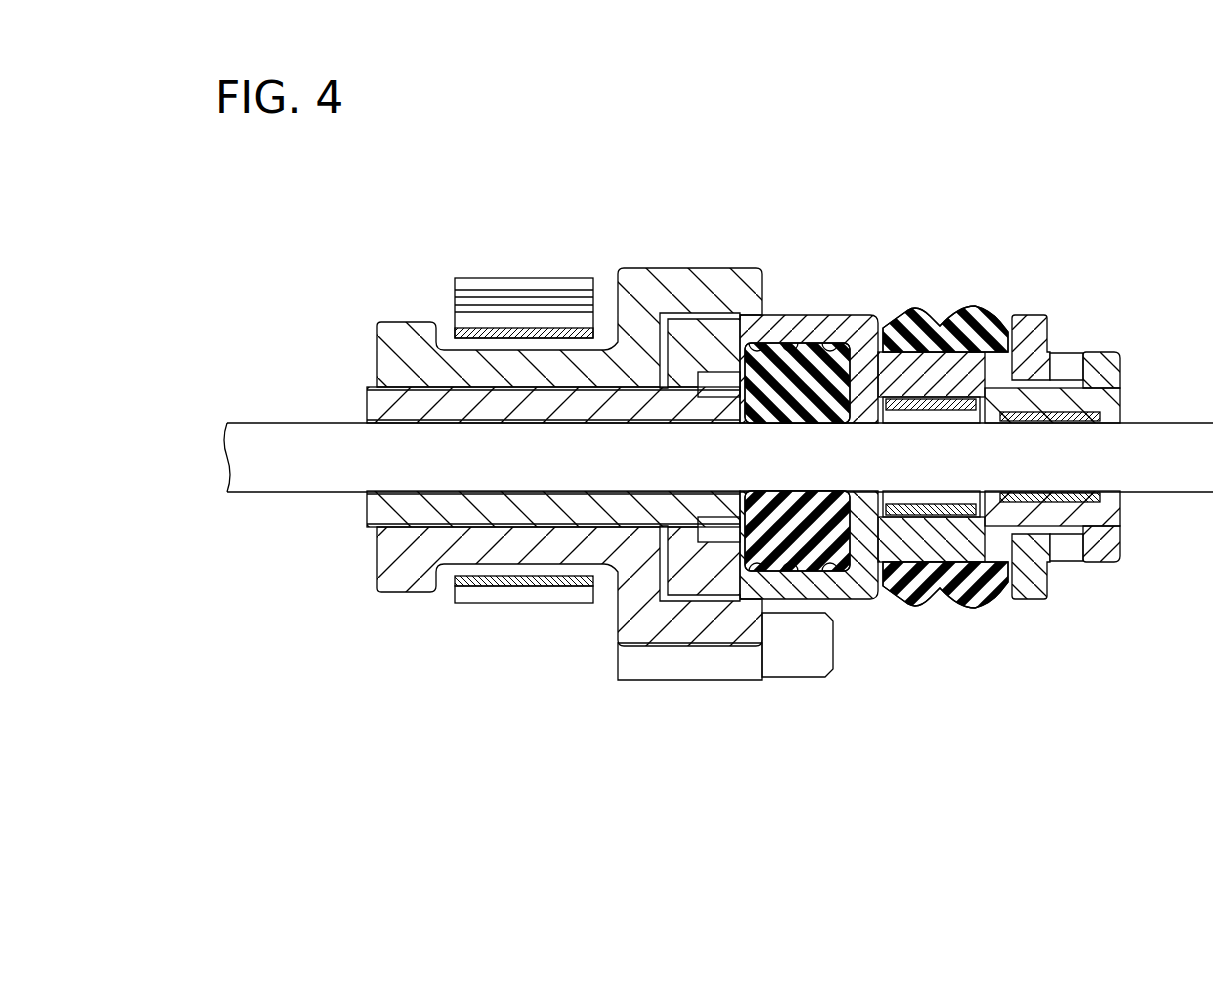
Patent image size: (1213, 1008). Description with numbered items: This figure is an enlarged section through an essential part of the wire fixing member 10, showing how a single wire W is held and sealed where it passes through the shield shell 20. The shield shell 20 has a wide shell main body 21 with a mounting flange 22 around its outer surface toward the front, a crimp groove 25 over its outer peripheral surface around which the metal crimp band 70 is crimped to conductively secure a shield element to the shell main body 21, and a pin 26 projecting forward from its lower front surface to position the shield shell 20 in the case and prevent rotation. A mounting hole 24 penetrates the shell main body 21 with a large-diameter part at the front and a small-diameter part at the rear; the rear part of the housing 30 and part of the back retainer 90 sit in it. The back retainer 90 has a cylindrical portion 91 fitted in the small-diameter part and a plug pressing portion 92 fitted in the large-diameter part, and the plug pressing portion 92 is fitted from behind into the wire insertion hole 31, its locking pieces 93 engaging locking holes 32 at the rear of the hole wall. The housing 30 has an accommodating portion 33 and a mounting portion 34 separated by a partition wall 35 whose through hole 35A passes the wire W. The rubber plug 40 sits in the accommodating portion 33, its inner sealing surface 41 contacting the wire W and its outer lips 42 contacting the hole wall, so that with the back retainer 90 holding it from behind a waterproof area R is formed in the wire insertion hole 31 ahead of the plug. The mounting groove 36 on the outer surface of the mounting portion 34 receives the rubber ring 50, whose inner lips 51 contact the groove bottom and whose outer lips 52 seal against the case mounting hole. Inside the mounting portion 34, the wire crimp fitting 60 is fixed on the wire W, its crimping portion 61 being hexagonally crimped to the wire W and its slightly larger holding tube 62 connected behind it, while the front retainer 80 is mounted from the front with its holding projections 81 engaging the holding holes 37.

The wire fixing member 10 is at (804, 150).
The shield shell 20 is at (640, 252).
The shell main body 21 is at (402, 350).
The mounting flange 22 is at (694, 300).
The mounting hole 24 is at (468, 388).
The crimp groove 25 is at (525, 333).
The pin 26 is at (805, 663).
The housing 30 is at (852, 302).
The wire insertion hole 31 is at (788, 358).
The locking hole 32 is at (740, 320).
The accommodating portion 33 is at (820, 325).
The mounting portion 34 is at (1032, 367).
The partition wall 35 is at (865, 505).
The through hole 35A is at (882, 425).
The mounting groove 36 is at (915, 600).
The holding hole 37 is at (1060, 367).
The rubber plug 40 is at (866, 318).
The inner sealing surface 41 is at (822, 505).
The outer lip 42 is at (798, 568).
The rubber ring 50 is at (925, 295).
The inner lip 51 is at (988, 587).
The outer lip 52 is at (960, 607).
The wire crimp fitting 60 is at (950, 407).
The crimping portion 61 is at (1033, 500).
The holding tube 62 is at (915, 505).
The crimp band 70 is at (555, 300).
The front retainer 80 is at (1134, 395).
The holding projection 81 is at (1073, 373).
The back retainer 90 is at (374, 522).
The cylindrical portion 91 is at (512, 507).
The plug pressing portion 92 is at (660, 520).
The locking piece 93 is at (708, 360).
The waterproof area R is at (986, 382).
The wire W is at (1190, 432).